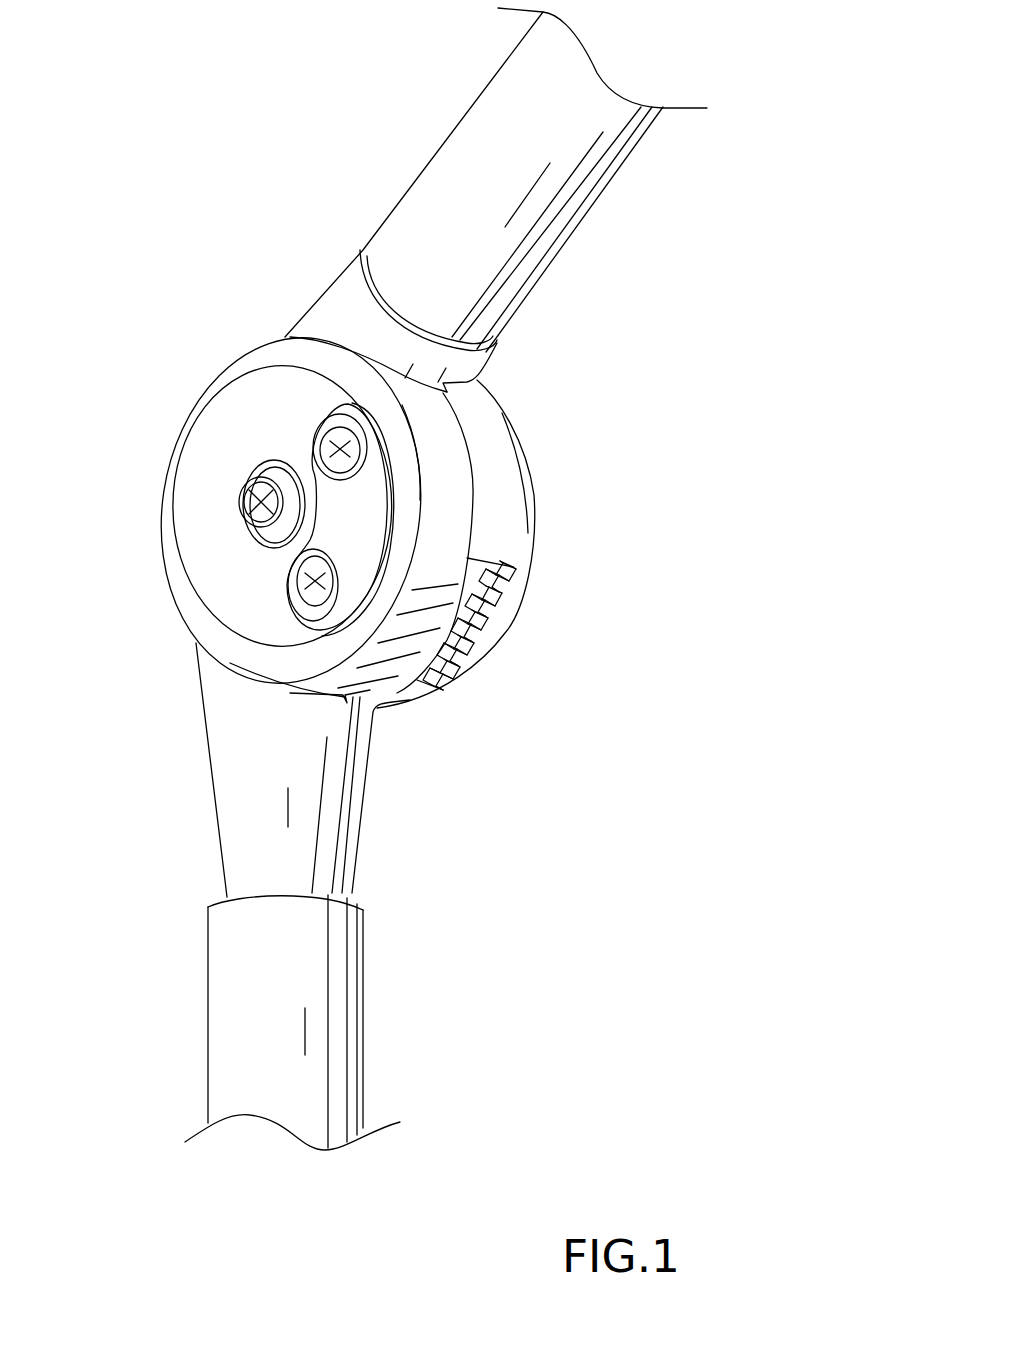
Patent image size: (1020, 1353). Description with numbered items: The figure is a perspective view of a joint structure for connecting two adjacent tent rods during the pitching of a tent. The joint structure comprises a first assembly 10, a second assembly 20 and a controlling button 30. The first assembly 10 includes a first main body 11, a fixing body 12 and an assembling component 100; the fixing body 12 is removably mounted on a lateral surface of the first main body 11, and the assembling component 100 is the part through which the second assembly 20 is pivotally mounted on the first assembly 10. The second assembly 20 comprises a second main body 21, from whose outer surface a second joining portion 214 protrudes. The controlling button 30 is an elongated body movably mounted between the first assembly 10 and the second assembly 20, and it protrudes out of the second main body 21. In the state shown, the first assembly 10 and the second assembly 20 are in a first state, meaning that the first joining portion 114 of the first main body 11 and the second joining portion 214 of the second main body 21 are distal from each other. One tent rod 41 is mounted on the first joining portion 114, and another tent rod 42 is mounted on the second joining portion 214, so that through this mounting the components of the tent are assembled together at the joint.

The first assembly 10 is at (177, 610).
The first main body 11 is at (262, 388).
The fixing body 12 is at (373, 513).
The second assembly 20 is at (537, 545).
The second main body 21 is at (400, 690).
The controlling button 30 is at (472, 628).
The tent rod 41 is at (567, 198).
The tent rod 42 is at (236, 993).
The assembling component 100 is at (256, 478).
The first joining portion 114 is at (345, 295).
The second joining portion 214 is at (232, 822).